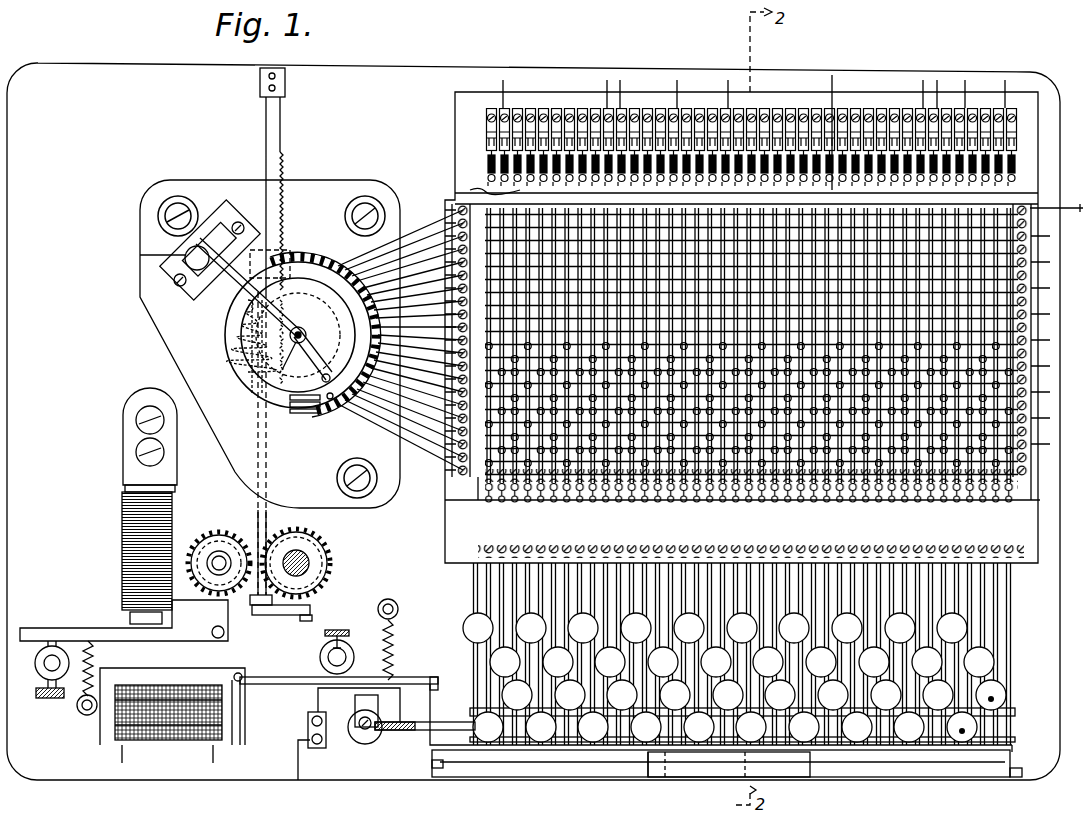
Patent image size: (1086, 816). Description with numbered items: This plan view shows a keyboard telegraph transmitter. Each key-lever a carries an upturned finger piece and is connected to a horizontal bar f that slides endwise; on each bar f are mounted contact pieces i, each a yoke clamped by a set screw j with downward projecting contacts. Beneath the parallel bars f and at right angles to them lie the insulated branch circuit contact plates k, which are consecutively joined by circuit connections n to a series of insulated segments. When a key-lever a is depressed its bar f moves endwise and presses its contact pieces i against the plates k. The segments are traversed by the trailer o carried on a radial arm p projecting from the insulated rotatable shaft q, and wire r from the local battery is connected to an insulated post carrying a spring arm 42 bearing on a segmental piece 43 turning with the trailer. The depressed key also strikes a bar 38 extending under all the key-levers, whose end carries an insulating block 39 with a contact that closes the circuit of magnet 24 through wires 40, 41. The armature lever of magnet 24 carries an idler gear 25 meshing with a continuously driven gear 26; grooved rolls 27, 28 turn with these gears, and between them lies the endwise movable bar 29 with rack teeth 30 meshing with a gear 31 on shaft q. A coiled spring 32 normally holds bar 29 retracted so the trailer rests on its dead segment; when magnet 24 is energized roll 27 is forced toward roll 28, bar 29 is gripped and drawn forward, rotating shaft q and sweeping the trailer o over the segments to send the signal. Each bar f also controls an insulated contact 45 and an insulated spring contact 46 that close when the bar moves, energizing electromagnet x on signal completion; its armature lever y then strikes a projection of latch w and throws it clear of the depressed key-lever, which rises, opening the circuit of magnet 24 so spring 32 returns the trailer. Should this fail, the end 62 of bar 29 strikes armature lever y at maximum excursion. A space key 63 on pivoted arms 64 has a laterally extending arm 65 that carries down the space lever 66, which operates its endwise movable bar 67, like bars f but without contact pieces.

The magnet 24 is at (122, 552).
The idler gear 25 is at (206, 540).
The continuously driven gear 26 is at (330, 563).
The grooved roll 27 is at (200, 585).
The grooved roll 28 is at (322, 548).
The endwise movable bar 29 is at (272, 130).
The rack teeth 30 is at (281, 210).
The gear 31 is at (316, 318).
The coiled spring 32 is at (240, 310).
The bar 38 is at (436, 722).
The block 39 is at (390, 732).
The circuit wire 40 is at (123, 495).
The circuit wire 41 is at (122, 603).
The spring arm 42 is at (240, 272).
The segmental piece 43 is at (245, 345).
The insulated contact 45 is at (487, 136).
The insulated spring contact 46 is at (830, 108).
The end of bar 62 is at (312, 608).
The space key 63 is at (729, 764).
The arms 64 is at (612, 775).
The laterally extending arm 65 is at (1008, 712).
The space lever 66 is at (1000, 658).
The endwise movable bar 67 is at (1032, 480).
The key-lever a is at (478, 583).
The horizontal bar f is at (470, 190).
The contact piece i is at (472, 478).
The set screw j is at (618, 496).
The branch circuit contact plate k is at (415, 198).
The circuit connection n is at (444, 200).
The trailer o is at (298, 413).
The radial arm p is at (330, 360).
The rotatable shaft q is at (288, 365).
The wire r is at (140, 252).
The latch w is at (436, 690).
The electromagnet x is at (165, 742).
The armature lever y is at (290, 684).